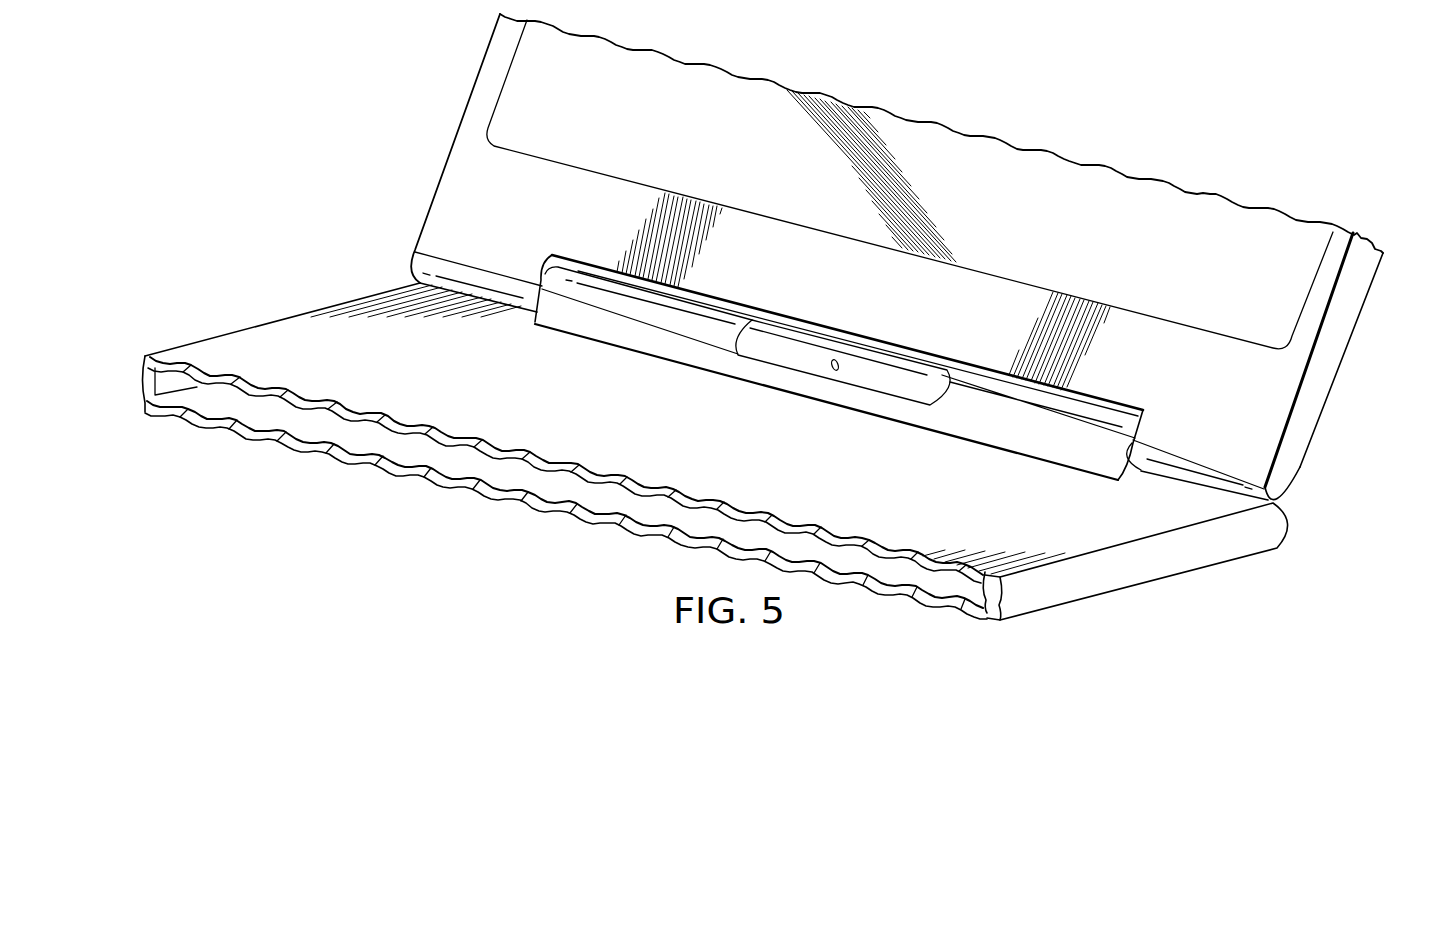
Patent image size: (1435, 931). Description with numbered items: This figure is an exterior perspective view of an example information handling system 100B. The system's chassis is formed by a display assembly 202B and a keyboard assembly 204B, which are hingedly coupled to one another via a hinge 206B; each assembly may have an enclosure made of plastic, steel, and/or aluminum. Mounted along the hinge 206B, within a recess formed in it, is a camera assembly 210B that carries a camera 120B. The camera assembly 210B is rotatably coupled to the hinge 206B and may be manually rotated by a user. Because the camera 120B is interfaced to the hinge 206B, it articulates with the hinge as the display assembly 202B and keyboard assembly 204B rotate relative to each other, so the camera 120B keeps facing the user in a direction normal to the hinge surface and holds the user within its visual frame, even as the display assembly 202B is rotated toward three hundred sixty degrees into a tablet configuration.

The information handling system 100B is at (245, 149).
The display assembly 202B is at (1328, 363).
The keyboard assembly 204B is at (1150, 572).
The hinge 206B is at (673, 348).
The camera assembly 210B is at (907, 384).
The camera 120B is at (832, 366).